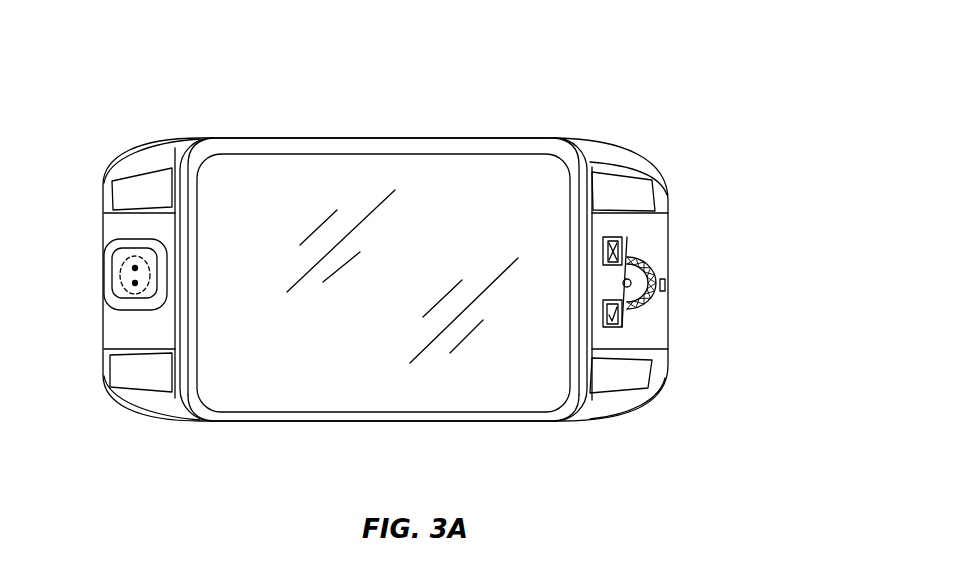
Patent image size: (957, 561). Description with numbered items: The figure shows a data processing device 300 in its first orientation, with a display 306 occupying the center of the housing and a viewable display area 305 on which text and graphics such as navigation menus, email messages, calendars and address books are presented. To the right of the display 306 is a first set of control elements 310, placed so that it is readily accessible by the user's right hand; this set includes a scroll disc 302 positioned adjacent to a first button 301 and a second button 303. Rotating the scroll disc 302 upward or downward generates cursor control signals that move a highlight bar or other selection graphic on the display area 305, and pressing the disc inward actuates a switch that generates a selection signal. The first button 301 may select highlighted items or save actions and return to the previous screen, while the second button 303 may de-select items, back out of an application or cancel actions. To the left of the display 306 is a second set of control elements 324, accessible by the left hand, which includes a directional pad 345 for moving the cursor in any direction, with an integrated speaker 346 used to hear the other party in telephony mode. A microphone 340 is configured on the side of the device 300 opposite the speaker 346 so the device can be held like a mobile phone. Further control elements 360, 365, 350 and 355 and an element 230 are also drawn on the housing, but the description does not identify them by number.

The data processing device 300 is at (97, 71).
The display 306 is at (366, 148).
The viewable display area 305 is at (322, 388).
The upper left button 360 is at (148, 200).
The lower left button 365 is at (151, 376).
The upper right button 350 is at (631, 202).
The lower right button 355 is at (629, 386).
The second set of control elements 324 is at (88, 277).
The speaker 346 is at (127, 260).
The directional pad 345 is at (79, 313).
The first set of control elements 310 is at (726, 279).
The first button 301 is at (628, 248).
The scroll disc 302 is at (652, 306).
The second button 303 is at (625, 318).
The selector axis 230 is at (682, 283).
The microphone 340 is at (706, 269).